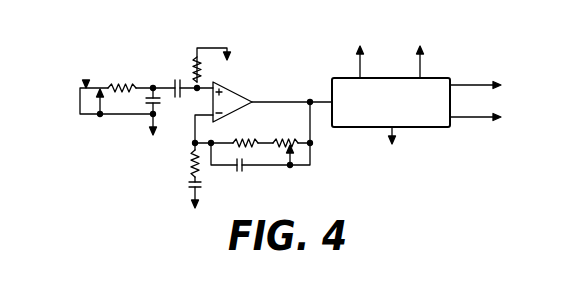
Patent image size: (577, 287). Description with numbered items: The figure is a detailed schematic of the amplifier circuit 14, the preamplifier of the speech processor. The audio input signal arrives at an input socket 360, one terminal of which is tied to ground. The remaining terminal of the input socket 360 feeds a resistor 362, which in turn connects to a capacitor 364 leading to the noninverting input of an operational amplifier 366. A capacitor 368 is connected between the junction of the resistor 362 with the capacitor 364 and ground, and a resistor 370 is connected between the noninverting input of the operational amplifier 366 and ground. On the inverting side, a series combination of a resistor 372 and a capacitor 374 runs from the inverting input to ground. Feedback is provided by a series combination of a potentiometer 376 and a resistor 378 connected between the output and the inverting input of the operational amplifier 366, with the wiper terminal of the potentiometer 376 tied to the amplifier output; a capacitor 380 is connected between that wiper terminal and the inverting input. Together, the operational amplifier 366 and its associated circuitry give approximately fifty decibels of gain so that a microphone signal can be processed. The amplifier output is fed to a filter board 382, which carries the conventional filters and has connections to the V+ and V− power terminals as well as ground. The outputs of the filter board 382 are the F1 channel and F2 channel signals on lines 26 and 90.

The amplifier circuit 14 is at (293, 52).
The F1 channel line 26 is at (467, 86).
The F2 channel line 90 is at (467, 118).
The input socket 360 is at (86, 81).
The resistor 362 is at (117, 84).
The capacitor 364 is at (174, 79).
The operational amplifier 366 is at (238, 90).
The capacitor 368 is at (145, 105).
The resistor 370 is at (193, 60).
The resistor 372 is at (191, 163).
The capacitor 374 is at (190, 184).
The potentiometer 376 is at (294, 137).
The resistor 378 is at (262, 130).
The capacitor 380 is at (243, 172).
The filter board 382 is at (436, 79).